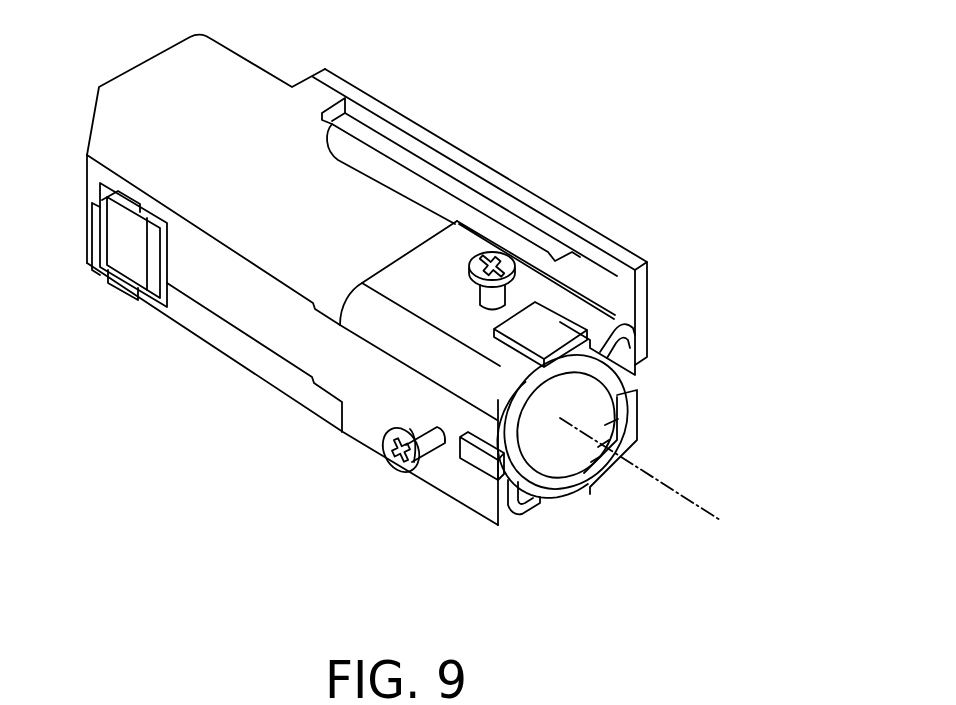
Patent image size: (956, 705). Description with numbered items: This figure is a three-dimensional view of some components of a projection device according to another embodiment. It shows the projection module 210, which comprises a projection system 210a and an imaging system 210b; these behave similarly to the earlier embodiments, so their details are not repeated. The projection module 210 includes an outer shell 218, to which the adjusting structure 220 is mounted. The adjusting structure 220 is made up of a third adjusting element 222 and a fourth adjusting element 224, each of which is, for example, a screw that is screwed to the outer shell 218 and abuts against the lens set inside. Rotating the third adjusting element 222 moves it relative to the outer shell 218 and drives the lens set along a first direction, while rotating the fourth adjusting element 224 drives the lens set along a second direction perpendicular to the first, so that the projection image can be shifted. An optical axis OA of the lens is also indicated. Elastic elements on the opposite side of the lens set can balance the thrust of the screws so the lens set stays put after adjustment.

The projection module 210 is at (626, 67).
The projection system 210a is at (397, 90).
The imaging system 210b is at (583, 281).
The outer shell 218 is at (470, 493).
The adjusting structure 220 is at (382, 565).
The third adjusting element 222 is at (430, 438).
The fourth adjusting element 224 is at (487, 298).
The optical axis OA is at (660, 483).